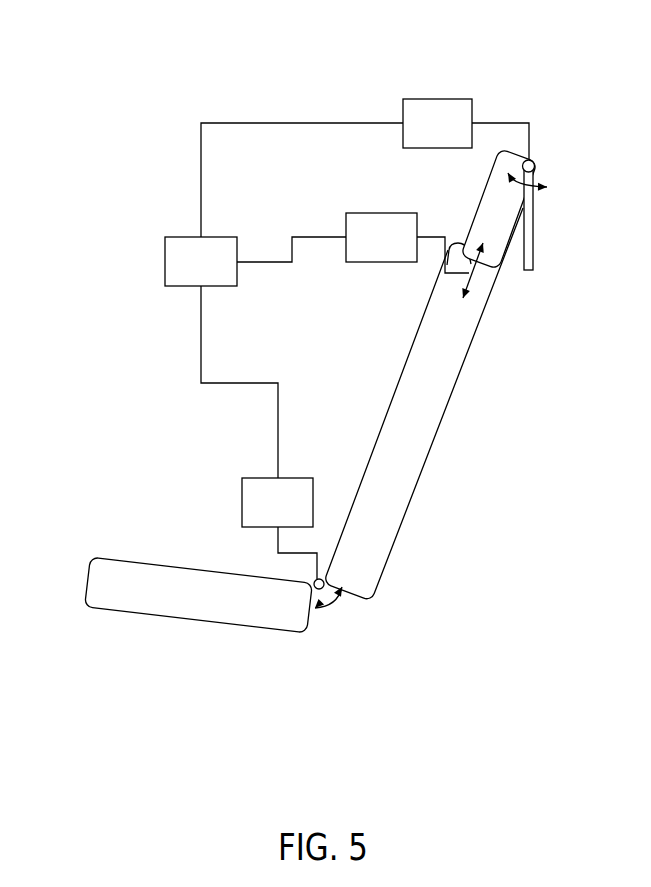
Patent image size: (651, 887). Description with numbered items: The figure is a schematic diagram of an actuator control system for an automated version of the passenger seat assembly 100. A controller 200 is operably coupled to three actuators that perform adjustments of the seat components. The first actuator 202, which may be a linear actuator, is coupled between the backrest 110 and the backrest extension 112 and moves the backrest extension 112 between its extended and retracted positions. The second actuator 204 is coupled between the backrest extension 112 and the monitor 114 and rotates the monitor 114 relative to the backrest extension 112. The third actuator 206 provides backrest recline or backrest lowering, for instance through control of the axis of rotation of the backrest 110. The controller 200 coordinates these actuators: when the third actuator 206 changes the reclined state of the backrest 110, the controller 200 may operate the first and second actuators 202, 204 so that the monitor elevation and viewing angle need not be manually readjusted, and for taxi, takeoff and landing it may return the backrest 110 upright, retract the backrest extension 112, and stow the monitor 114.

The passenger seat assembly 100 is at (168, 66).
The backrest 110 is at (422, 433).
The backrest extension 112 is at (493, 200).
The monitor 114 is at (528, 217).
The controller 200 is at (201, 261).
The first actuator 202 is at (381, 237).
The second actuator 204 is at (437, 123).
The third actuator 206 is at (277, 502).